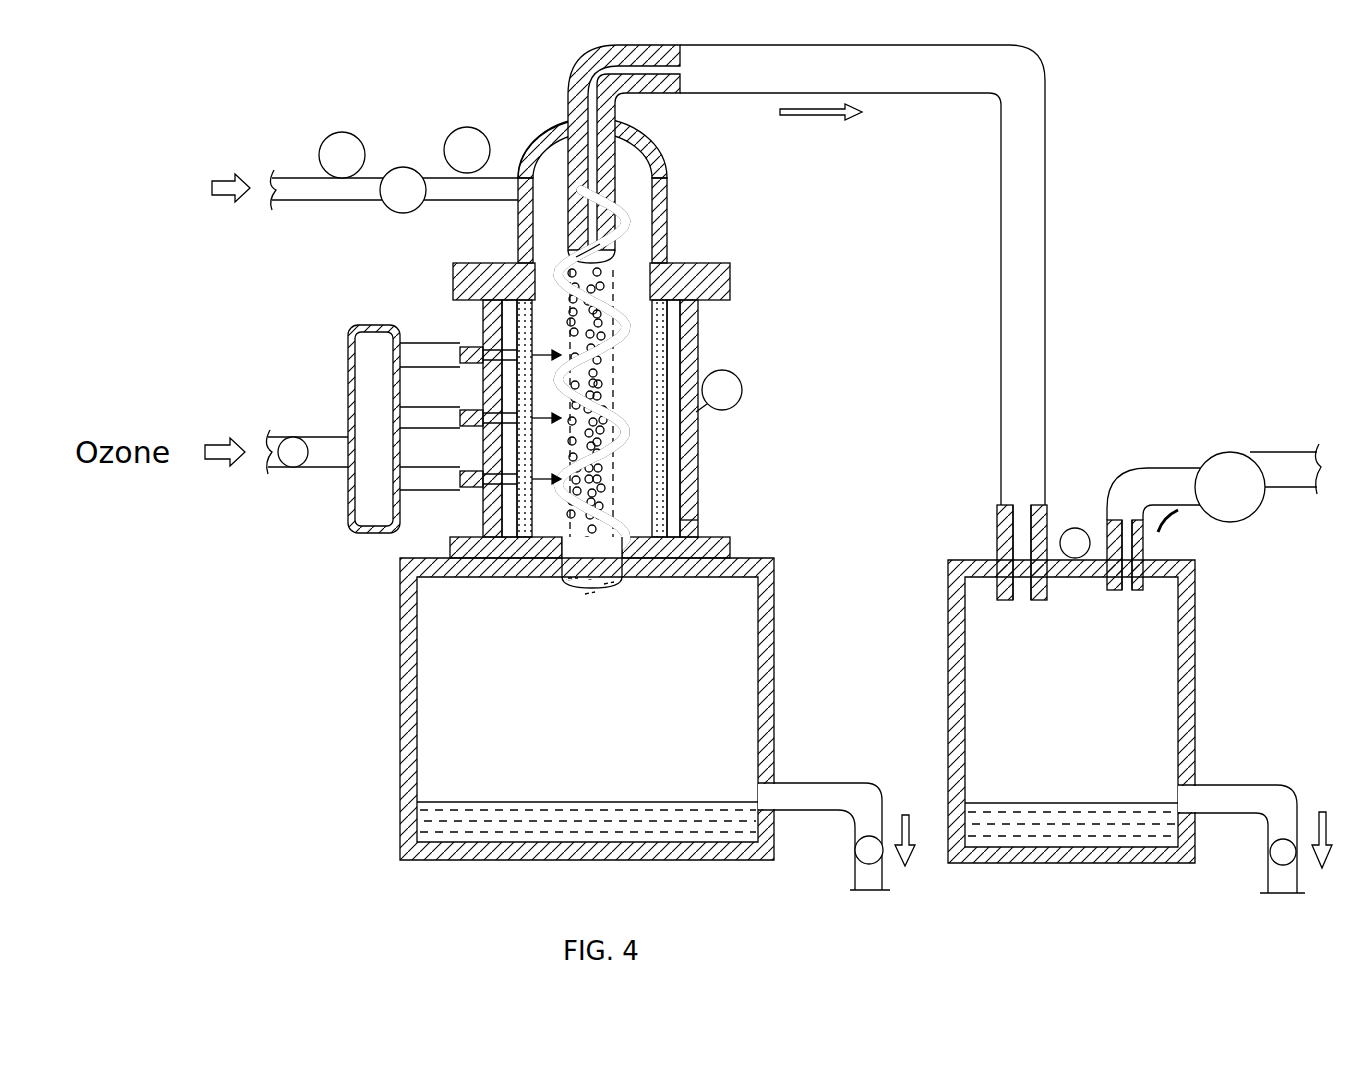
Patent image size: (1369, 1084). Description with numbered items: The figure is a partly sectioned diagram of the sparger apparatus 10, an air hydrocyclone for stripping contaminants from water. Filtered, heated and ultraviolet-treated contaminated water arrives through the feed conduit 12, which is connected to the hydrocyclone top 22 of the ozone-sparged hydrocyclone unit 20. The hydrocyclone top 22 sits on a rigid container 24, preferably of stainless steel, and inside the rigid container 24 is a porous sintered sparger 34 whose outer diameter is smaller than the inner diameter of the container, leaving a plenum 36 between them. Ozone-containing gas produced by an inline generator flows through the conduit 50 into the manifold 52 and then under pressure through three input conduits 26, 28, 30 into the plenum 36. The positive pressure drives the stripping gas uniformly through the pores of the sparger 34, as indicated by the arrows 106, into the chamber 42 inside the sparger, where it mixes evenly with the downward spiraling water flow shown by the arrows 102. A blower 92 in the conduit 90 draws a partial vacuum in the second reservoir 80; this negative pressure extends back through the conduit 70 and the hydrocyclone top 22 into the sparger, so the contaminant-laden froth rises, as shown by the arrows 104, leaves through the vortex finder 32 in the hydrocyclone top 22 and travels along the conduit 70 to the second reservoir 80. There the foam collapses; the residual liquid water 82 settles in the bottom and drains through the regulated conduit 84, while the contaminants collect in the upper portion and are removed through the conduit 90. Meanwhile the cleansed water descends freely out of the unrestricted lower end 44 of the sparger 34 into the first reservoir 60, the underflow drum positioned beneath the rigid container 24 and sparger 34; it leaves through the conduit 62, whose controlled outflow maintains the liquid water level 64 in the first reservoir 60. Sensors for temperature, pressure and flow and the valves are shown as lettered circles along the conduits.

The sparger apparatus 10 is at (1198, 118).
The feed conduit 12 is at (305, 178).
The hydrocyclone unit 20 is at (663, 150).
The hydrocyclone top 22 is at (660, 235).
The rigid container 24 is at (700, 350).
The input conduit 26 is at (487, 345).
The input conduit 28 is at (487, 410).
The input conduit 30 is at (487, 470).
The vortex finder 32 is at (556, 140).
The sparger 34 is at (668, 478).
The plenum 36 is at (625, 458).
The chamber 42 is at (676, 485).
The lower end of the sparger 44 is at (617, 588).
The conduit 50 is at (322, 437).
The manifold 52 is at (348, 355).
The first reservoir 60 is at (775, 650).
The conduit 62 is at (860, 780).
The liquid water level 64 is at (530, 802).
The conduit 70 is at (566, 100).
The second reservoir 80 is at (1195, 650).
The liquid water 82 is at (1065, 803).
The regulated conduit 84 is at (1270, 785).
The conduit 90 is at (1143, 468).
The blower 92 is at (1235, 452).
The arrows 102 is at (605, 258).
The arrows 104 is at (572, 497).
The arrows 106 is at (698, 507).